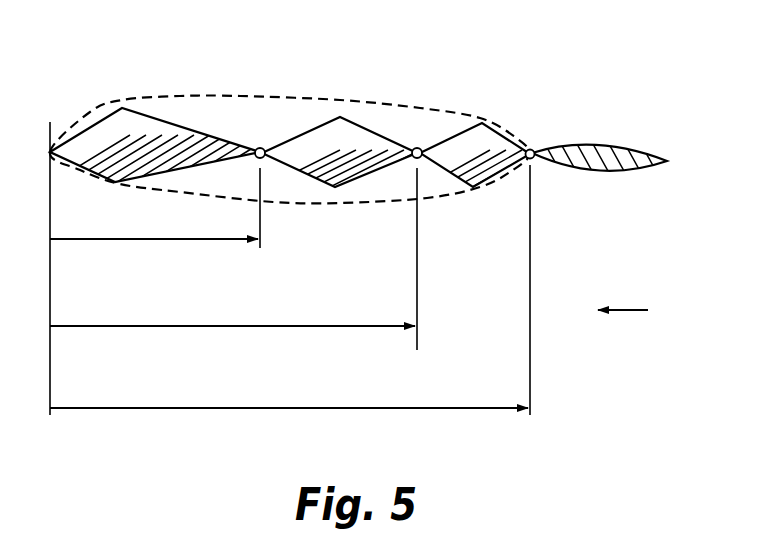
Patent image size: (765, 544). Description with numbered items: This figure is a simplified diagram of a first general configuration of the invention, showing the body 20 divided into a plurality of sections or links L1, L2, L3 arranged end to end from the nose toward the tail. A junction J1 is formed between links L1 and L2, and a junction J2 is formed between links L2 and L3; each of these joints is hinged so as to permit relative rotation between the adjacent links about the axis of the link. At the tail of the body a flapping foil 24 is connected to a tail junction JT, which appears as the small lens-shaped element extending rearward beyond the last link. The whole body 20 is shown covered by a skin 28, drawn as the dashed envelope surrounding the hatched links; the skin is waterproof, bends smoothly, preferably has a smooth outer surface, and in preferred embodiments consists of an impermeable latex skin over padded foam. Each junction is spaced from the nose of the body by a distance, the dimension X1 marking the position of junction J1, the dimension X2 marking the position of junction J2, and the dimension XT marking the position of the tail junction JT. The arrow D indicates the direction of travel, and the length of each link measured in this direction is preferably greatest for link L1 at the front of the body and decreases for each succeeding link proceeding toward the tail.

The body 20 is at (375, 76).
The flapping foil 24 is at (598, 168).
The skin 28 is at (352, 203).
The first link L1 is at (145, 104).
The second link L2 is at (323, 122).
The third link L3 is at (483, 122).
The first junction J1 is at (262, 148).
The second junction J2 is at (418, 148).
The tail junction JT is at (531, 150).
The distance of first junction from nose X1 is at (149, 240).
The distance of second junction from nose X2 is at (243, 327).
The distance of tail junction from nose XT is at (291, 409).
The direction of travel D is at (601, 308).